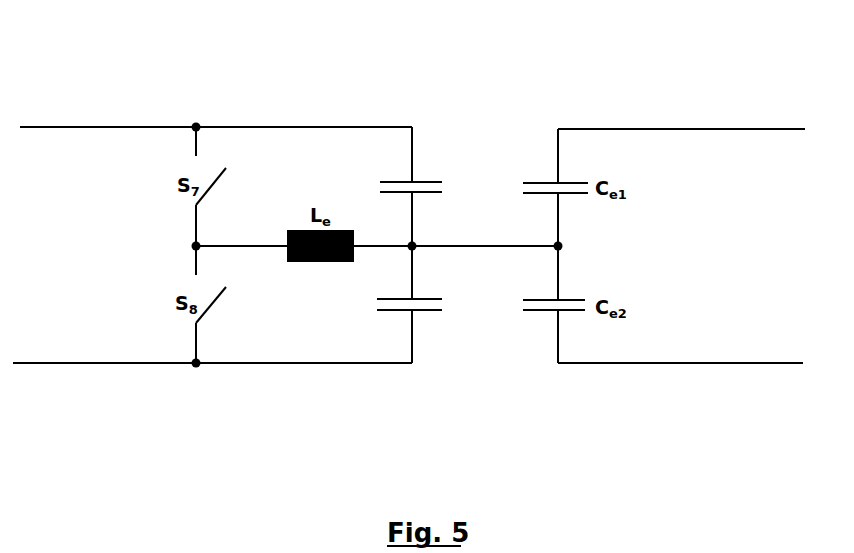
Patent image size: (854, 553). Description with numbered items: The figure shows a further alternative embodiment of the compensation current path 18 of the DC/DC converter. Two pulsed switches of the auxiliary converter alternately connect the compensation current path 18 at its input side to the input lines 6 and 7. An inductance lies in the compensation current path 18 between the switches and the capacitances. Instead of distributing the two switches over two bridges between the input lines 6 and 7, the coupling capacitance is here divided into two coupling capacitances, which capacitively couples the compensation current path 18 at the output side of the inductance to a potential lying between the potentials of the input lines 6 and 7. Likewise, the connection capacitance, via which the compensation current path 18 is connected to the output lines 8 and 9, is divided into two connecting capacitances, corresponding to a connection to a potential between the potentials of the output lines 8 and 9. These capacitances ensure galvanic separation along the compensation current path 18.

The input line 6 is at (105, 127).
The input line 7 is at (105, 363).
The output line 8 is at (673, 129).
The output line 9 is at (656, 363).
The compensation current path 18 is at (380, 160).